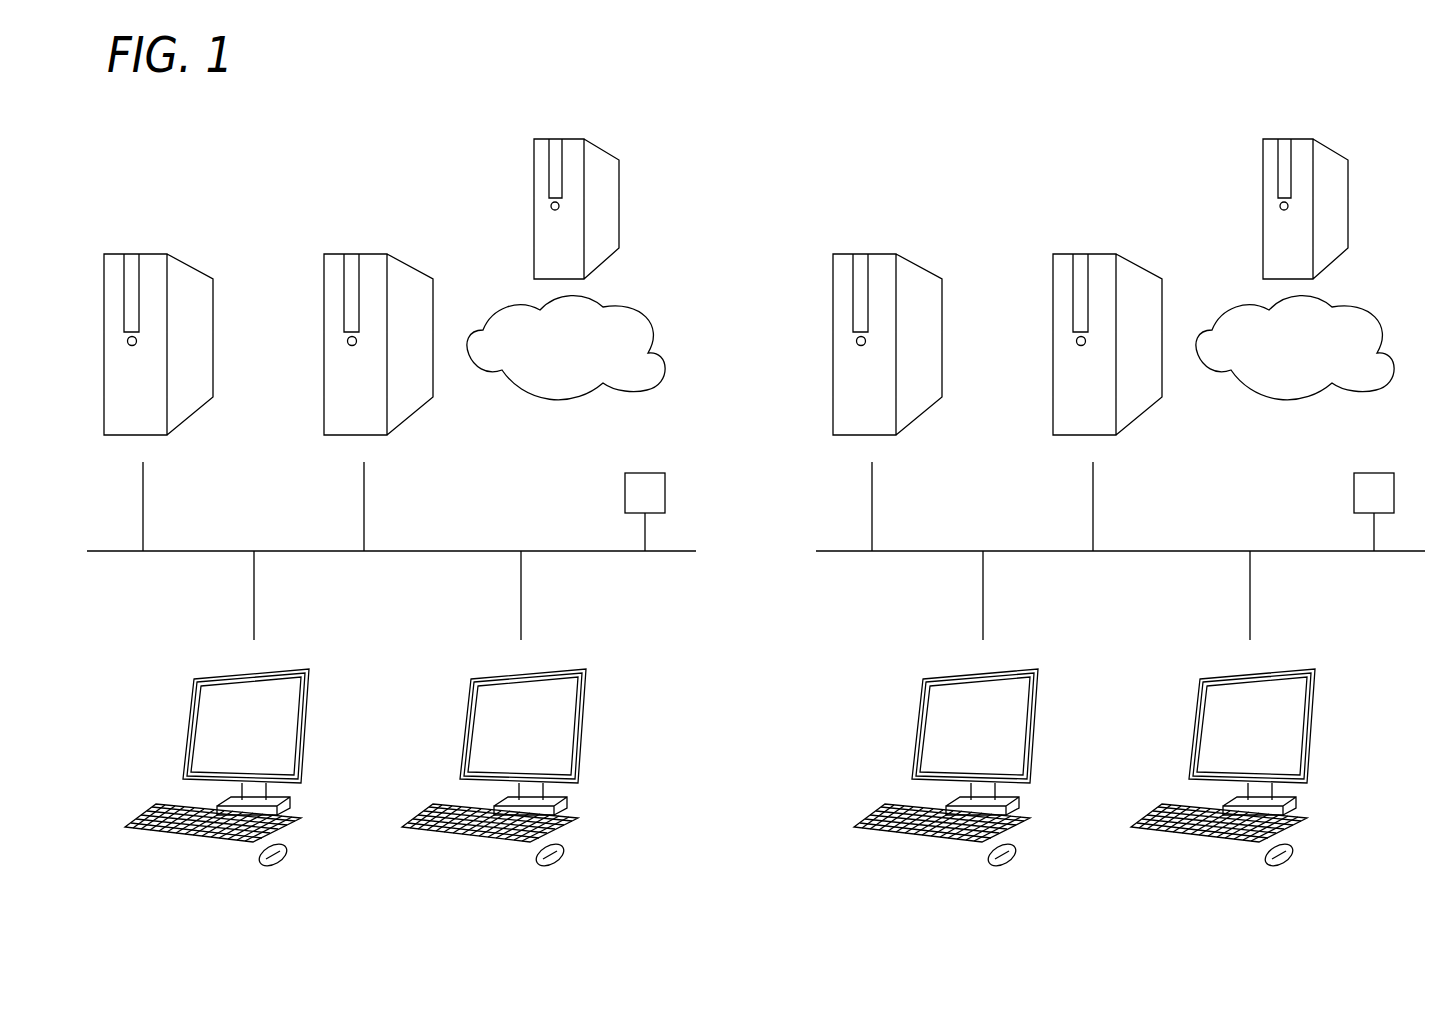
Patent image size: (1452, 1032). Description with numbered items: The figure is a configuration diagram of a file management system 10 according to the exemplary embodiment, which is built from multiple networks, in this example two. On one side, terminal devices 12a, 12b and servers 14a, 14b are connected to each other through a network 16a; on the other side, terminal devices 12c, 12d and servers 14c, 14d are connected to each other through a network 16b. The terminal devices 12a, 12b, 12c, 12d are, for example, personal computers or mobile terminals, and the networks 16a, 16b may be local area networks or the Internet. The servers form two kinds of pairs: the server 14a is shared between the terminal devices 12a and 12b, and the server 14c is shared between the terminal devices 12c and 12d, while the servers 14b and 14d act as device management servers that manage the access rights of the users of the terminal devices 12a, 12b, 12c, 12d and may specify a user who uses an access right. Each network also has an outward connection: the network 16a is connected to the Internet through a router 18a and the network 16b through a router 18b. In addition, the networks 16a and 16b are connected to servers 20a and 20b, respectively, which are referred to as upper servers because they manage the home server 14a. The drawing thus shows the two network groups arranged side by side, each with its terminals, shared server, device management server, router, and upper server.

The file management system 10 is at (925, 912).
The terminal device 12a is at (287, 668).
The terminal device 12b is at (563, 668).
The terminal device 12c is at (1016, 668).
The terminal device 12d is at (1292, 668).
The server 14a is at (148, 253).
The server 14b is at (363, 253).
The server 14c is at (877, 253).
The server 14d is at (1092, 253).
The network 16a is at (457, 551).
The network 16b is at (1186, 551).
The router 18a is at (655, 473).
The router 18b is at (1384, 473).
The server 20a is at (572, 139).
The server 20b is at (1301, 139).